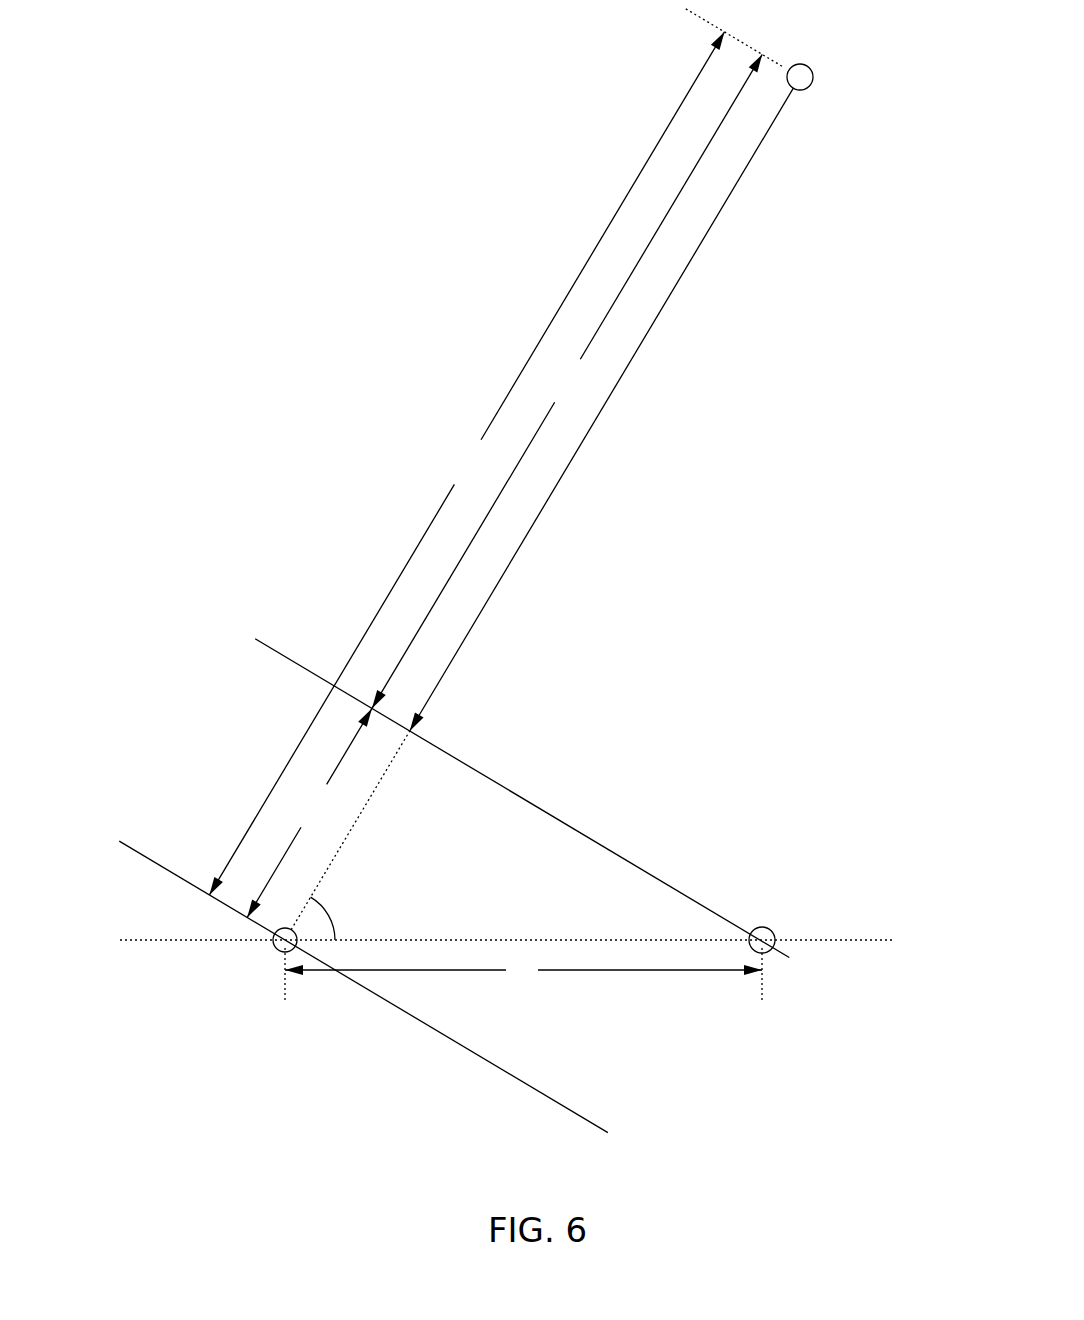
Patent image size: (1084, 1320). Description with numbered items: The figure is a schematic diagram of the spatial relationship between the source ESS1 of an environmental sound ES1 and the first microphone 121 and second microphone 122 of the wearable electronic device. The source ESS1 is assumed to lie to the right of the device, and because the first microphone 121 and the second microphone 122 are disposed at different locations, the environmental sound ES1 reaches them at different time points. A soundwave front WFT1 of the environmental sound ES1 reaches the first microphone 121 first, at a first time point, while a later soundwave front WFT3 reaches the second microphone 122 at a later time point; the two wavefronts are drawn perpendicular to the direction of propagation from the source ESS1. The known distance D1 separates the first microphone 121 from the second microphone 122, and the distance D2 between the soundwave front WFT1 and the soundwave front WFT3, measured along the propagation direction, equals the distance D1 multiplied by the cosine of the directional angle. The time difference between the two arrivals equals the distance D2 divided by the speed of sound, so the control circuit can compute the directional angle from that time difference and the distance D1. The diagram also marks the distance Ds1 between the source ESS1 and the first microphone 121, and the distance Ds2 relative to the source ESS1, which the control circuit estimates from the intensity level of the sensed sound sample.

The first microphone 121 is at (772, 928).
The second microphone 122 is at (275, 950).
The source ESS1 is at (809, 66).
The environmental sound ES1 is at (557, 488).
The soundwave front WFT1 is at (608, 848).
The soundwave front WFT3 is at (543, 1095).
The distance Ds1 is at (567, 381).
The distance Ds2 is at (467, 463).
The distance D1 is at (523, 974).
The distance D2 is at (310, 813).